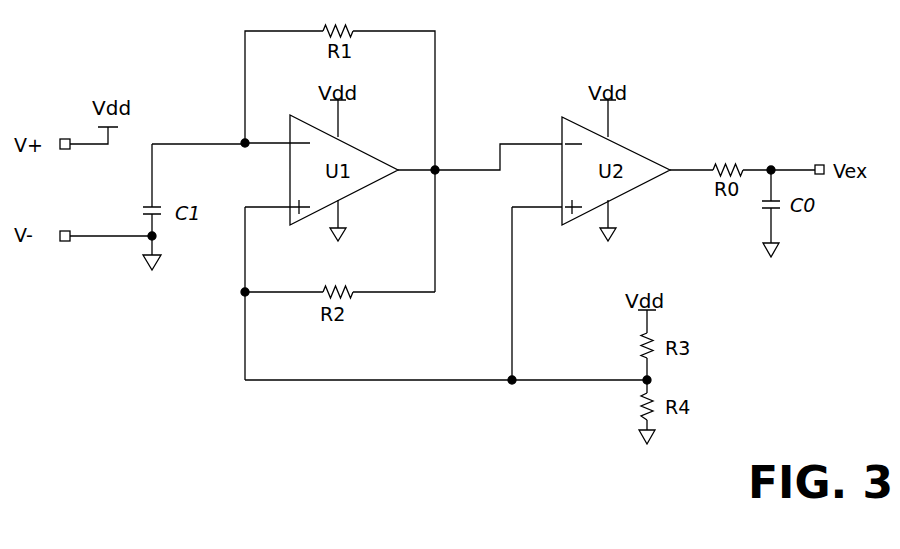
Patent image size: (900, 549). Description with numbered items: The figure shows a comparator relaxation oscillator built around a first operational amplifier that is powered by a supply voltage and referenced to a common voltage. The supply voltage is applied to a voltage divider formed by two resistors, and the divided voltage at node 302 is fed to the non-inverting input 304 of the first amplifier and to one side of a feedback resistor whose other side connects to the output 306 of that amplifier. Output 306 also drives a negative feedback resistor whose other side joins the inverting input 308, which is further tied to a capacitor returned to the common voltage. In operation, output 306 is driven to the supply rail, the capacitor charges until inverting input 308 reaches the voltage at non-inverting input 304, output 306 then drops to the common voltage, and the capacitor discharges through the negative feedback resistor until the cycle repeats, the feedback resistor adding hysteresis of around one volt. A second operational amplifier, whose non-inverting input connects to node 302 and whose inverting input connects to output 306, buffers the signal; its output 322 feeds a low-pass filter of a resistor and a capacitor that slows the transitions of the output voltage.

The node 302 is at (652, 378).
The non-inverting input 304 is at (274, 208).
The output 306 is at (416, 168).
The inverting input 308 is at (272, 142).
The output 322 is at (692, 169).